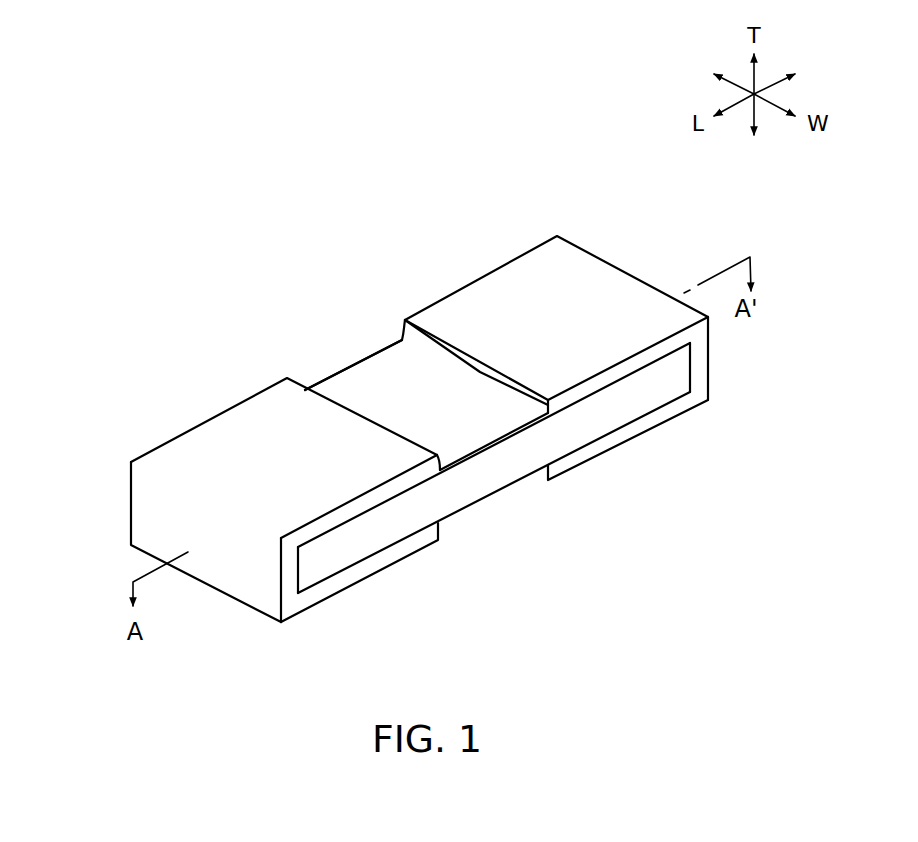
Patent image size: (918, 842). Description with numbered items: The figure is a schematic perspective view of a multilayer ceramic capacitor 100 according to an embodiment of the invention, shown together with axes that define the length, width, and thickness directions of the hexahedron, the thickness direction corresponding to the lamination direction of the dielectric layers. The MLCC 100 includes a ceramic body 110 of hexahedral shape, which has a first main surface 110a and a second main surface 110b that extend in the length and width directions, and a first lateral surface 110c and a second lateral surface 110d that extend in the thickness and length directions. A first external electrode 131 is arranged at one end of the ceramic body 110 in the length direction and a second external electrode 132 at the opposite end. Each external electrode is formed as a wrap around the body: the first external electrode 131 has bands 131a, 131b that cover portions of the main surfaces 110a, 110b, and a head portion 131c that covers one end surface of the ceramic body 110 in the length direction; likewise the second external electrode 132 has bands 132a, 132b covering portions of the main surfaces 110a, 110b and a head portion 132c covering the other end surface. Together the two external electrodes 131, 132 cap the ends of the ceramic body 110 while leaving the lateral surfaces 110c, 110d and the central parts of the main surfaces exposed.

The multilayer ceramic capacitor 100 is at (180, 204).
The ceramic body 110 is at (364, 353).
The first main surface 110a is at (427, 373).
The second main surface 110b is at (455, 517).
The first lateral surface 110c is at (317, 380).
The second lateral surface 110d is at (508, 467).
The first external electrode 131 is at (188, 424).
The band of first external electrode 131a is at (260, 427).
The band of first external electrode 131b is at (330, 600).
The head portion of first external electrode 131c is at (143, 528).
The second external electrode 132 is at (478, 270).
The band of second external electrode 132a is at (597, 283).
The band of second external electrode 132b is at (633, 442).
The head portion of second external electrode 132c is at (710, 353).